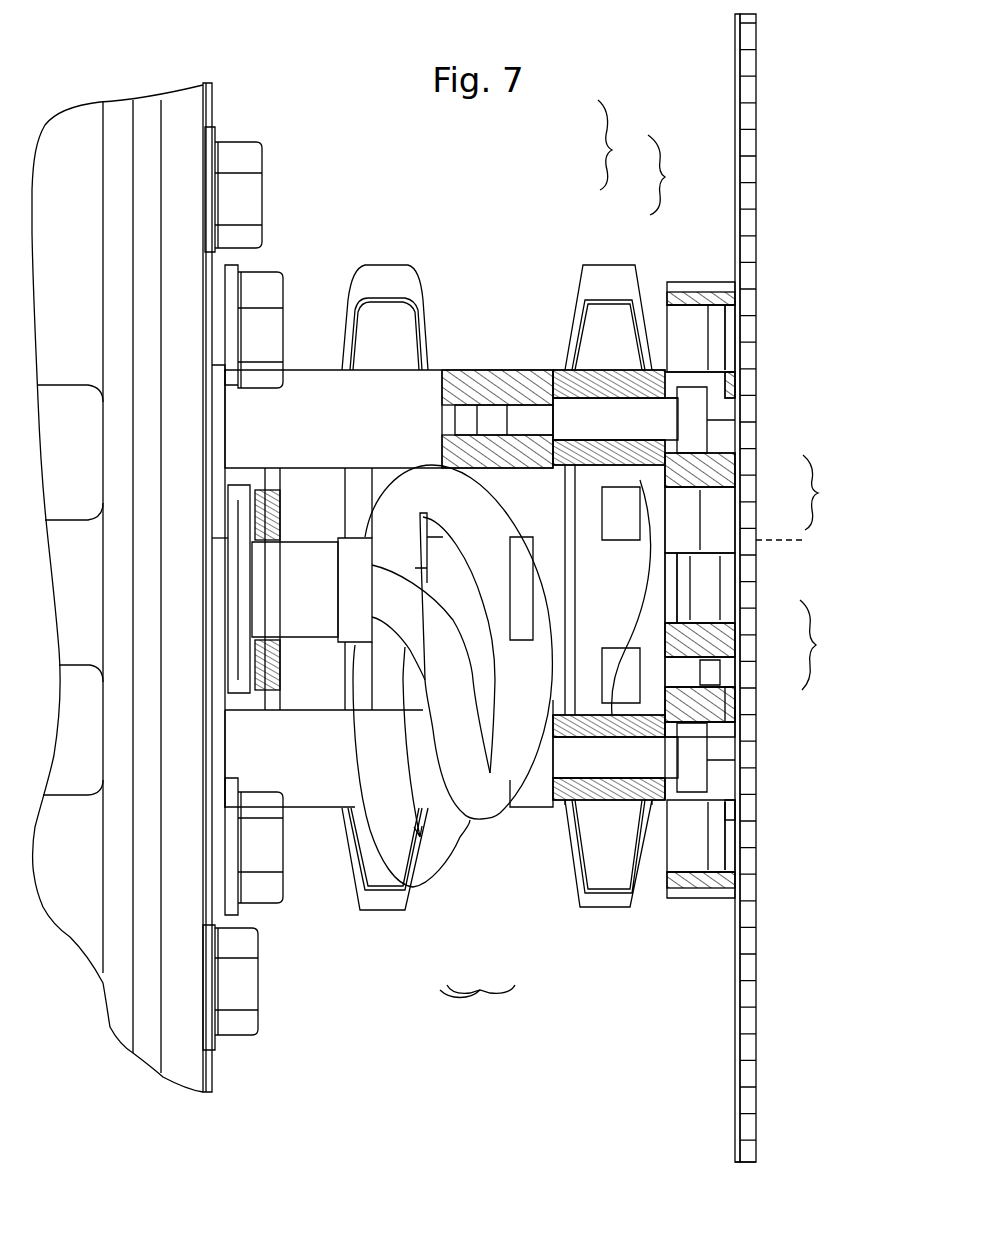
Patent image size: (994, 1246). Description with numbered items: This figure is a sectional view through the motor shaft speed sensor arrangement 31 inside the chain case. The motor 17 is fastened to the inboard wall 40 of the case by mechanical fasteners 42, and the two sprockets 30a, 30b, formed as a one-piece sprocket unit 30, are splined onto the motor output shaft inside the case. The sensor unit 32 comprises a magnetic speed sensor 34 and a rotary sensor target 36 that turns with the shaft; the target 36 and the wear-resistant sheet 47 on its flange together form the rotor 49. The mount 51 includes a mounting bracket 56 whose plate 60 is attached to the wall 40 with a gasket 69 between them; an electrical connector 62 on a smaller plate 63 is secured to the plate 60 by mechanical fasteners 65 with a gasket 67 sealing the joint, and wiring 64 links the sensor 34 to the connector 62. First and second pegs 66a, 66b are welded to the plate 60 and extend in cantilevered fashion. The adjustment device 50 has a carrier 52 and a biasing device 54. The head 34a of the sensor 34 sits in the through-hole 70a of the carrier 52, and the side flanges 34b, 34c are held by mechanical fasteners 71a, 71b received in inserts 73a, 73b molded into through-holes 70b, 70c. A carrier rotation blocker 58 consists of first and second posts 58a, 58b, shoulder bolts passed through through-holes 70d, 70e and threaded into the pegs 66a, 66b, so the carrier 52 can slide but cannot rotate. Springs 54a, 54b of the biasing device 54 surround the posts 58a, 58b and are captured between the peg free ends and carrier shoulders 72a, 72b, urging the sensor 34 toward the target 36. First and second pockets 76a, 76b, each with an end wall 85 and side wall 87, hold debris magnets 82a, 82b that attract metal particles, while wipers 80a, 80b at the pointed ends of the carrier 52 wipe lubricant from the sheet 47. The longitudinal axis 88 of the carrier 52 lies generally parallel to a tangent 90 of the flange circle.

The motor 17 is at (72, 133).
The inboard wall 40 is at (196, 110).
The mechanical fasteners 42 is at (287, 296).
The motor shaft speed sensor arrangement 31 is at (369, 140).
The gasket 69 is at (203, 408).
The second peg 66b is at (389, 419).
The first peg 66a is at (389, 753).
The plate 60 is at (227, 437).
The mechanical fasteners 65 is at (260, 510).
The electrical connector 62 is at (295, 589).
The smaller plate 63 is at (243, 567).
The gasket 67 is at (230, 538).
The wiring 64 is at (413, 470).
The mount 51 is at (480, 336).
The sprocket 30a is at (397, 907).
The sprocket 30b is at (587, 900).
The sprocket unit 30 is at (481, 1004).
The mounting bracket 56 is at (306, 832).
The shoulder 72b is at (640, 380).
The shoulder 72a is at (580, 893).
The spring 54a is at (553, 372).
The spring 54b is at (553, 370).
The biasing device 54 is at (621, 145).
The adjustment device 50 is at (671, 175).
The carrier 52 is at (660, 258).
The through-hole 70e is at (620, 412).
The through-hole 70d is at (620, 748).
The insert 73b is at (672, 447).
The insert 73a is at (737, 740).
The second wiper 80b is at (690, 282).
The first wiper 80a is at (692, 897).
The side wall 87 is at (740, 250).
The sheet 47 is at (735, 1078).
The rotor 49 is at (783, 968).
The second pocket 76b is at (735, 320).
The first pocket 76a is at (737, 842).
The second debris magnet 82b is at (718, 338).
The first debris magnet 82a is at (655, 875).
The end wall 85 is at (730, 365).
The second post 58b is at (735, 422).
The first post 58a is at (735, 520).
The carrier rotation blocker 58 is at (823, 492).
The tangent 90 is at (796, 541).
The through-hole 70c is at (640, 478).
The mechanical fastener 71b is at (625, 548).
The mechanical fastener 71a is at (633, 628).
The side flange 34c is at (613, 597).
The head 34a is at (720, 590).
The through-hole 70a is at (740, 560).
The magnetic speed sensor 34 is at (745, 580).
The rotary sensor target 36 is at (740, 668).
The side flange 34b is at (727, 787).
The sensor unit 32 is at (821, 645).
The longitudinal axis 88 is at (750, 697).
The through-hole 70b is at (737, 733).